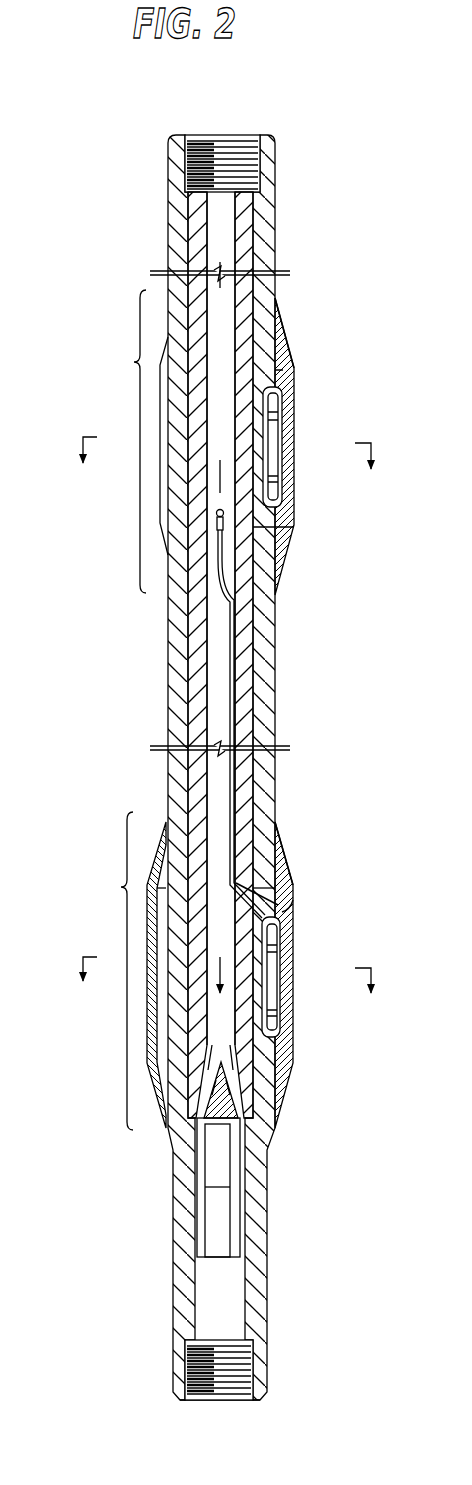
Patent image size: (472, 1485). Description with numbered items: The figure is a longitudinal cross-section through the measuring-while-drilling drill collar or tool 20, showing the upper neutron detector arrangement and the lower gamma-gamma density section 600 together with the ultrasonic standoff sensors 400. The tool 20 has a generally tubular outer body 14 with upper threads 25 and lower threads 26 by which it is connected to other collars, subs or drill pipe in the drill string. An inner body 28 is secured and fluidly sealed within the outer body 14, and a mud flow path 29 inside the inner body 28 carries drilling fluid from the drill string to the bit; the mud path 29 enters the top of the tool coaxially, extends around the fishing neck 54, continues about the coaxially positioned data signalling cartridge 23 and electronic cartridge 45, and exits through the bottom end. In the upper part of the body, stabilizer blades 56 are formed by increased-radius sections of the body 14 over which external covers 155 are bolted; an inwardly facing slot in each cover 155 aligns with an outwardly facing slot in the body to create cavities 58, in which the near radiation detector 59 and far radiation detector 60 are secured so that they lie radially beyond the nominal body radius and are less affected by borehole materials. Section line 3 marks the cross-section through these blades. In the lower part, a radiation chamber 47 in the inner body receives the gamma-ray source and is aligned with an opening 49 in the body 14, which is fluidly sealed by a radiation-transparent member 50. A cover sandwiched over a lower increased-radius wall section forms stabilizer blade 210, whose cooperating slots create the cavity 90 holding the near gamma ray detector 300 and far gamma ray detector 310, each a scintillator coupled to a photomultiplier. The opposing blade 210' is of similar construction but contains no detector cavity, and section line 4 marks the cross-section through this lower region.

The drill collar 20 is at (121, 253).
The outer body 14 is at (263, 645).
The upper threads 25 is at (253, 185).
The lower threads 26 is at (245, 1373).
The stabilizer blade 56 is at (294, 322).
The external cover 155 is at (287, 357).
The cavity 58 is at (292, 392).
The far radiation detector 60 is at (293, 413).
The near radiation detector 59 is at (282, 483).
The mud flow path 29 is at (223, 450).
The fishing neck 54 is at (225, 527).
The inner body 28 is at (244, 584).
The radiation chamber 47 is at (280, 838).
The opening 49 is at (287, 870).
The radiation-transparent member 50 is at (295, 897).
The near gamma ray detector 300 is at (290, 940).
The cavity 90 is at (278, 985).
The far gamma ray detector 310 is at (285, 1018).
The stabilizer blade 210 is at (306, 975).
The stabilizer blade 210' is at (128, 1000).
The data signalling cartridge 23 is at (207, 1167).
The electronic cartridge 45 is at (221, 1222).
The ultrasonic sensors 400 is at (134, 362).
The gamma-gamma density section 600 is at (121, 887).
The section line 3- 3 is at (227, 470).
The section line 4- 4 is at (225, 987).